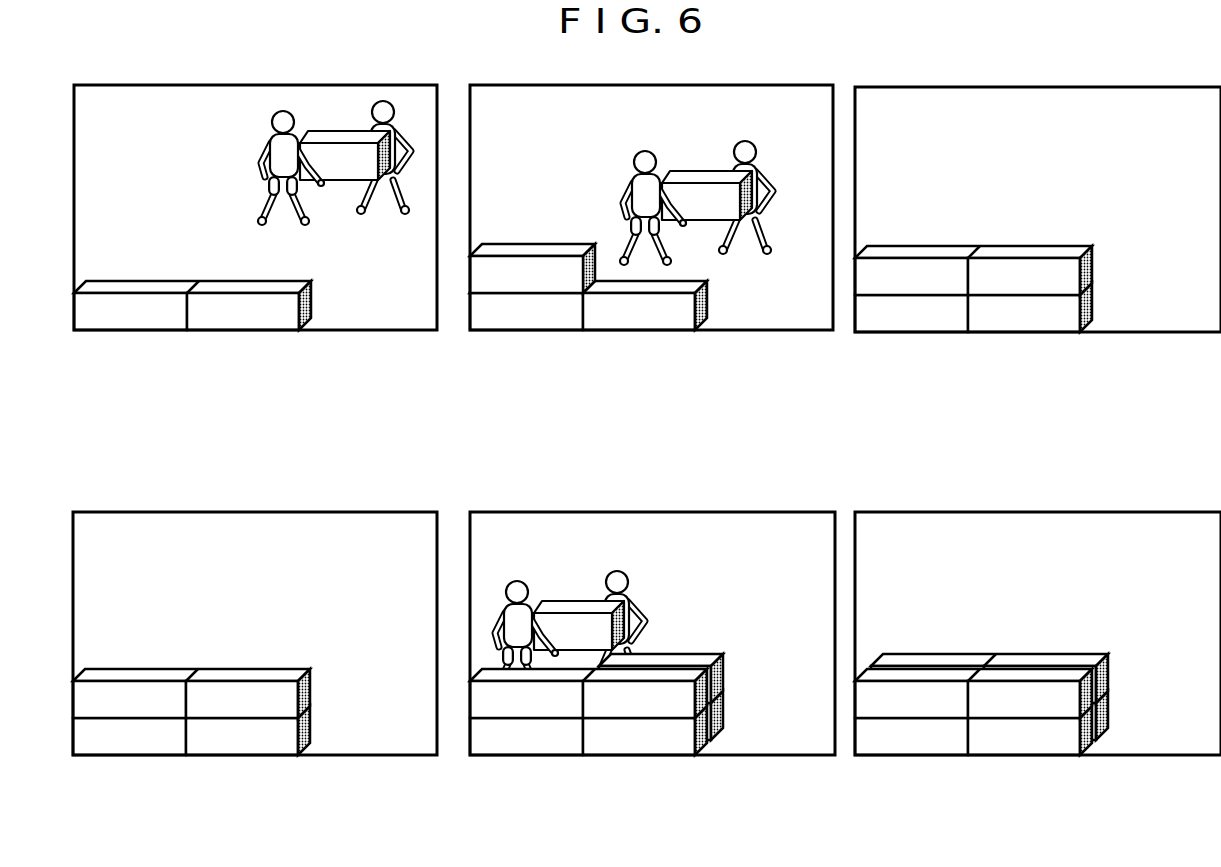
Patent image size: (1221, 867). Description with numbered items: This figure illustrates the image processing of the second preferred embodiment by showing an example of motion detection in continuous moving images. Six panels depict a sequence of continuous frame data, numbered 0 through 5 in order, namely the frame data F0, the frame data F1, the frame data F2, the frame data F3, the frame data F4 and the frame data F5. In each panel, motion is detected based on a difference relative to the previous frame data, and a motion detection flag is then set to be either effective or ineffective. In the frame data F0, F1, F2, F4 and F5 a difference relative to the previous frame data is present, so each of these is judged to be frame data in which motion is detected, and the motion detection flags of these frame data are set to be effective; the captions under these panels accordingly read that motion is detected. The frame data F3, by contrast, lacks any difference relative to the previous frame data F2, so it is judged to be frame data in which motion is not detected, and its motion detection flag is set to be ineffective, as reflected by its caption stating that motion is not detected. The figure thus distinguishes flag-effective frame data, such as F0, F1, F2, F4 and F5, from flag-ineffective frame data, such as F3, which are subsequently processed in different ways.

The frame data F0 is at (255, 216).
The frame data F1 is at (651, 216).
The frame data F2 is at (1038, 216).
The frame data F3 is at (255, 638).
The frame data F4 is at (652, 638).
The frame data F5 is at (1038, 638).
The frame F0 0 is at (255, 216).
The frame F1 1 is at (651, 216).
The frame F2 2 is at (1038, 216).
The frame F3 3 is at (255, 638).
The frame F4 4 is at (652, 638).
The frame F5 5 is at (1038, 638).